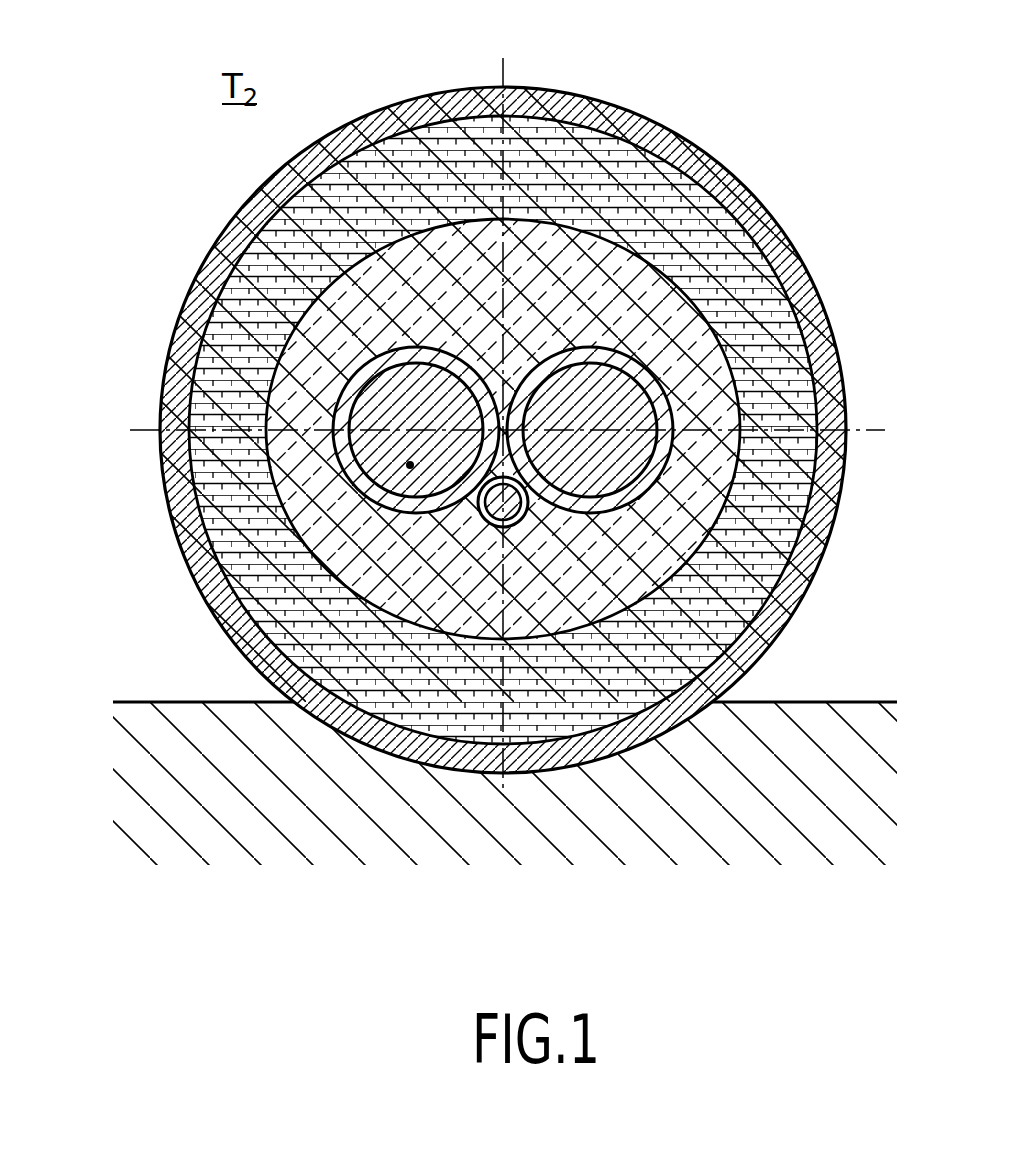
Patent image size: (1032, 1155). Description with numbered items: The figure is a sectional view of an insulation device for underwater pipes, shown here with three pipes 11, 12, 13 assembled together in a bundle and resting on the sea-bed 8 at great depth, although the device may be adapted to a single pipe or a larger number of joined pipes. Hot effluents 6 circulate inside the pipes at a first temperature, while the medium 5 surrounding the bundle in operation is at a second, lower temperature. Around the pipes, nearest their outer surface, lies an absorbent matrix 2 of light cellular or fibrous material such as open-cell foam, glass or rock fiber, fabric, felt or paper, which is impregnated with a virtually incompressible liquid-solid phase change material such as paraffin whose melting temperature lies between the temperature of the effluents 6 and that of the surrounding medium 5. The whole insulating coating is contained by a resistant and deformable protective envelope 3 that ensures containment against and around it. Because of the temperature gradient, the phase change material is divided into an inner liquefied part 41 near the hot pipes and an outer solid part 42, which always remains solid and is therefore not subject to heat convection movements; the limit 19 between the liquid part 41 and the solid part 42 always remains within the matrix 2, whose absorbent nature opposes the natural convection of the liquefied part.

The underwater pipe 11 is at (353, 362).
The underwater pipe 12 is at (658, 378).
The underwater pipe 13 is at (525, 520).
The absorbent matrix 2 is at (257, 385).
The protective envelope 3 is at (729, 169).
The liquefied part of the phase change material 41 is at (290, 464).
The outer solid part of the phase change material 42 is at (245, 526).
The surrounding medium 5 is at (490, 45).
The effluents 6 is at (410, 465).
The sea-bed 8 is at (488, 853).
The limit between liquid and solid parts 19 is at (583, 232).